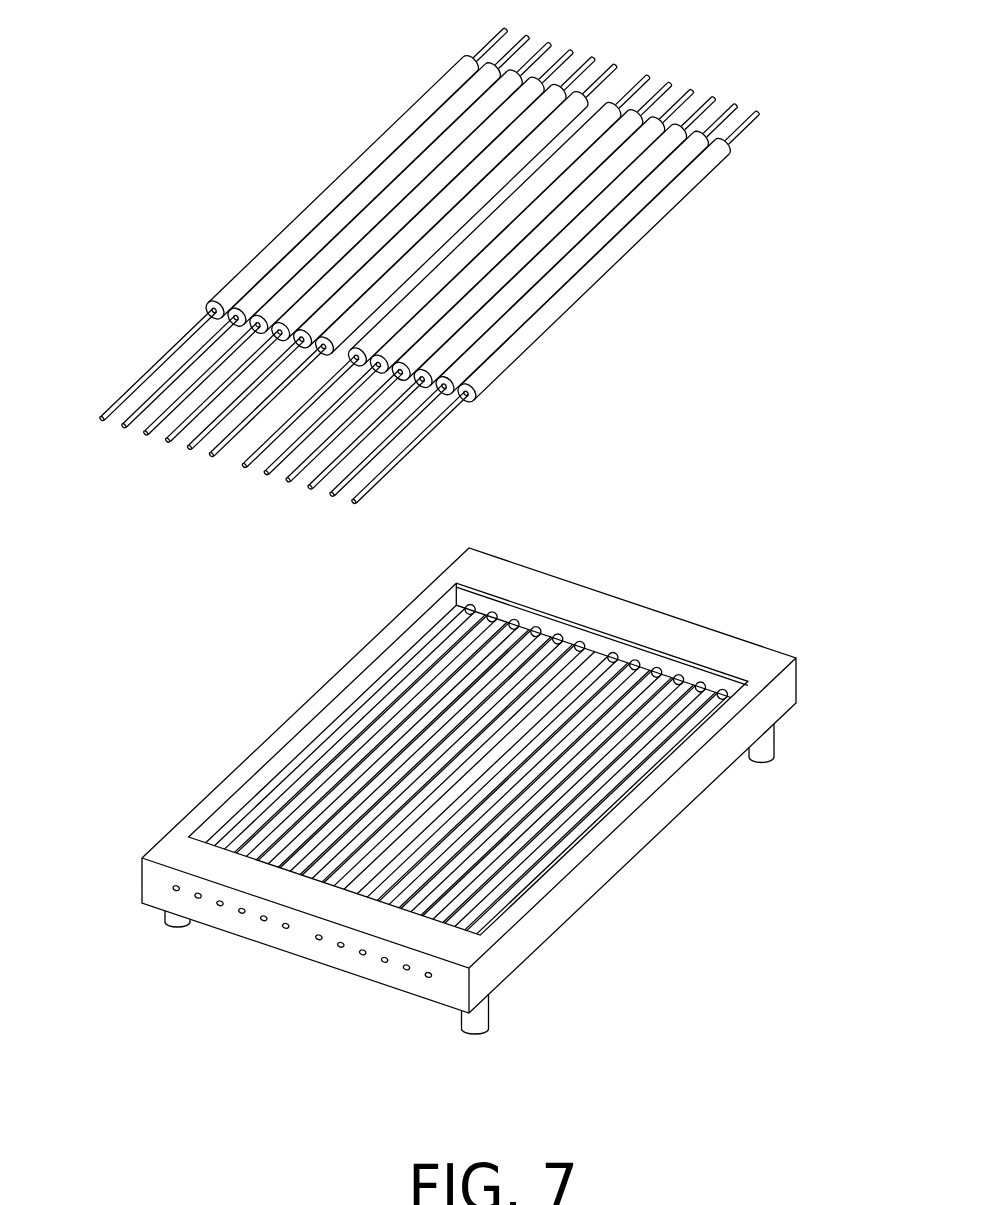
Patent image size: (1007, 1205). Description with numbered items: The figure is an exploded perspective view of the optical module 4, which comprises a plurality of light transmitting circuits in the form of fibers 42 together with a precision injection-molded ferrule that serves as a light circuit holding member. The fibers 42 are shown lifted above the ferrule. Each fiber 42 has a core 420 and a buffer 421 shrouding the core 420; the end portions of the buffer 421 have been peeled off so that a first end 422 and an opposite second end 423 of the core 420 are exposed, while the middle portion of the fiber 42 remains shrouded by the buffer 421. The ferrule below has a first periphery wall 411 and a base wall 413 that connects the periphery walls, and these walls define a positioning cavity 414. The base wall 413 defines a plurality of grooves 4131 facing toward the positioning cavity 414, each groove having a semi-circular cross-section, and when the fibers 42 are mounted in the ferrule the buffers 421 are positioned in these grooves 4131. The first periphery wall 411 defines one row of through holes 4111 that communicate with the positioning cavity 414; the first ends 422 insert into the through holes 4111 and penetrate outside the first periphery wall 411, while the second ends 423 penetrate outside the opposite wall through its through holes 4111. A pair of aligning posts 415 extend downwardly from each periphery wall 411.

The optical module 4 is at (98, 301).
The fiber 42 is at (675, 195).
The core 420 is at (352, 502).
The buffer 421 is at (600, 282).
The first end 422 is at (408, 448).
The second end 423 is at (751, 138).
The first periphery wall 411 is at (237, 866).
The through holes 4111 is at (719, 681).
The base wall 413 is at (548, 841).
The grooves 4131 is at (659, 737).
The positioning cavity 414 is at (559, 675).
The aligning posts 415 is at (766, 751).